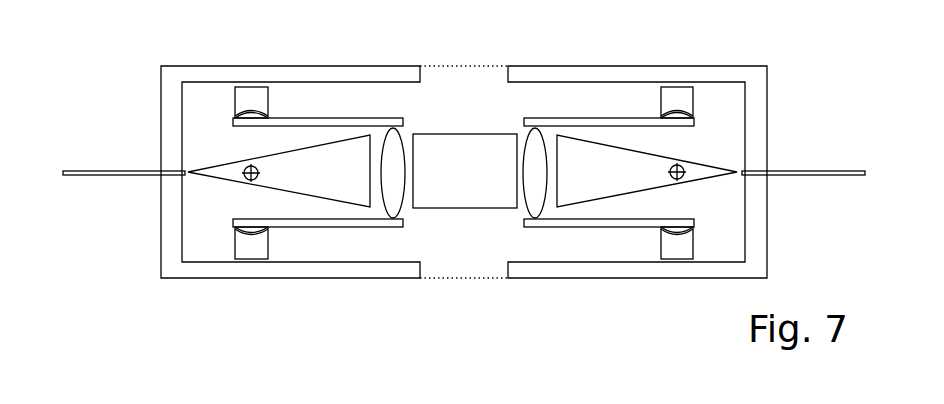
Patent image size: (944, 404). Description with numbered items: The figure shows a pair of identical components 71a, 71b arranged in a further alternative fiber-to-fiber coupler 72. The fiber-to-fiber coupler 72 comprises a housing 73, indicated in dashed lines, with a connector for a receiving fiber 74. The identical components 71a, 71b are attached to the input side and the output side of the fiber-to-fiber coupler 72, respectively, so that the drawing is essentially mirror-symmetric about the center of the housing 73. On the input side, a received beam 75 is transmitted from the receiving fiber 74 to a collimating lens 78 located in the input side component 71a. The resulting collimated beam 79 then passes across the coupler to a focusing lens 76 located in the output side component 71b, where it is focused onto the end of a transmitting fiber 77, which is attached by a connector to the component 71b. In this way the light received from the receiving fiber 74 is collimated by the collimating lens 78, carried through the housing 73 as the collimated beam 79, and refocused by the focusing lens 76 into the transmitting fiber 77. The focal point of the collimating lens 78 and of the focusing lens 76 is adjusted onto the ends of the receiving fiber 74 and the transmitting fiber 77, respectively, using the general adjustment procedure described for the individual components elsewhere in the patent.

The input side component 71a is at (318, 62).
The output side component 71b is at (600, 62).
The fiber-to-fiber coupler 72 is at (443, 62).
The housing 73 is at (462, 282).
The receiving fiber 74 is at (123, 175).
The received beam 75 is at (295, 193).
The focusing lens 76 is at (528, 210).
The transmitting fiber 77 is at (780, 175).
The collimating lens 78 is at (383, 210).
The collimated beam 79 is at (448, 210).